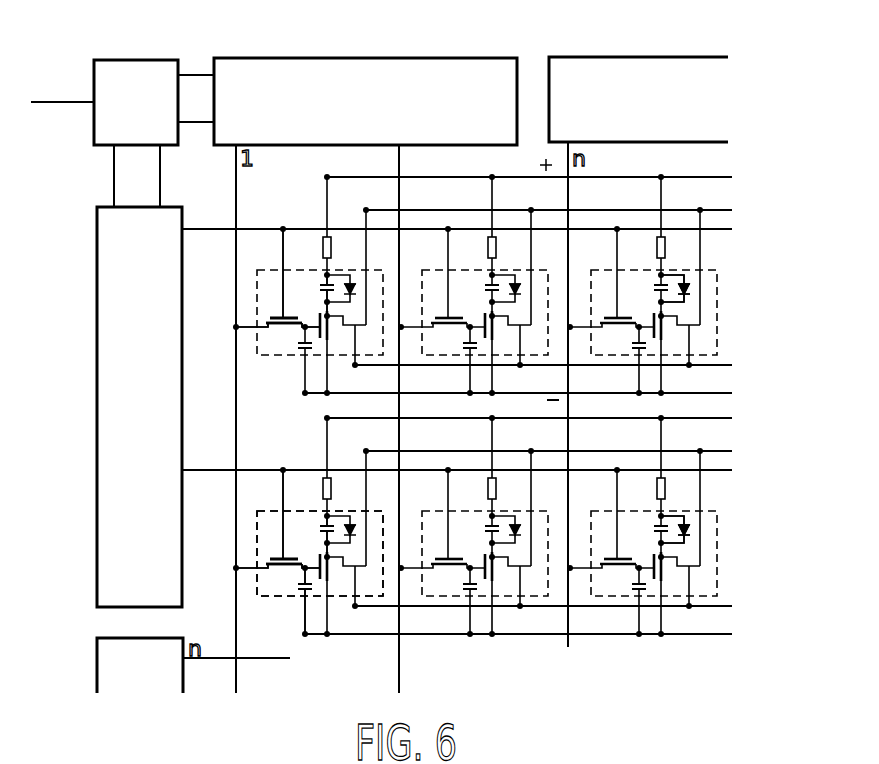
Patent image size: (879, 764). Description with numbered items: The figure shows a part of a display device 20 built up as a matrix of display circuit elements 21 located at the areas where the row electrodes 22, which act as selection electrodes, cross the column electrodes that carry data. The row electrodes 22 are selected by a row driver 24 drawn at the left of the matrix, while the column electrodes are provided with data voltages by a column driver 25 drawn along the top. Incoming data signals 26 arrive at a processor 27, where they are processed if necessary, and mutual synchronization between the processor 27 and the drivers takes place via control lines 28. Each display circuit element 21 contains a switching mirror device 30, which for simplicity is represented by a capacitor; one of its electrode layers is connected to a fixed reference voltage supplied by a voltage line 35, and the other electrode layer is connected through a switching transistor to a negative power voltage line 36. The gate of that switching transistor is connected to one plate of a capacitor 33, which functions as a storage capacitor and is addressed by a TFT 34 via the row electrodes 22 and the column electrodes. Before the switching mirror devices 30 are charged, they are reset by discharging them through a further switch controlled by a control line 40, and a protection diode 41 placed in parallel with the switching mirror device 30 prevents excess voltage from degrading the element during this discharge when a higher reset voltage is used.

The display device 20 is at (85, 465).
The display circuit element 21 is at (293, 265).
The row electrode 22 is at (255, 229).
The row driver 24 is at (105, 365).
The column driver 25 is at (423, 70).
The incoming data signal 26 is at (53, 101).
The processor 27 is at (130, 74).
The control line 28 is at (190, 73).
The switching mirror device 30 is at (332, 268).
The capacitor 33 is at (308, 590).
The TFT 34 is at (280, 594).
The voltage line 35 is at (327, 177).
The negative power voltage line 36 is at (418, 634).
The control line 40 is at (457, 606).
The protection diode 41 is at (688, 285).